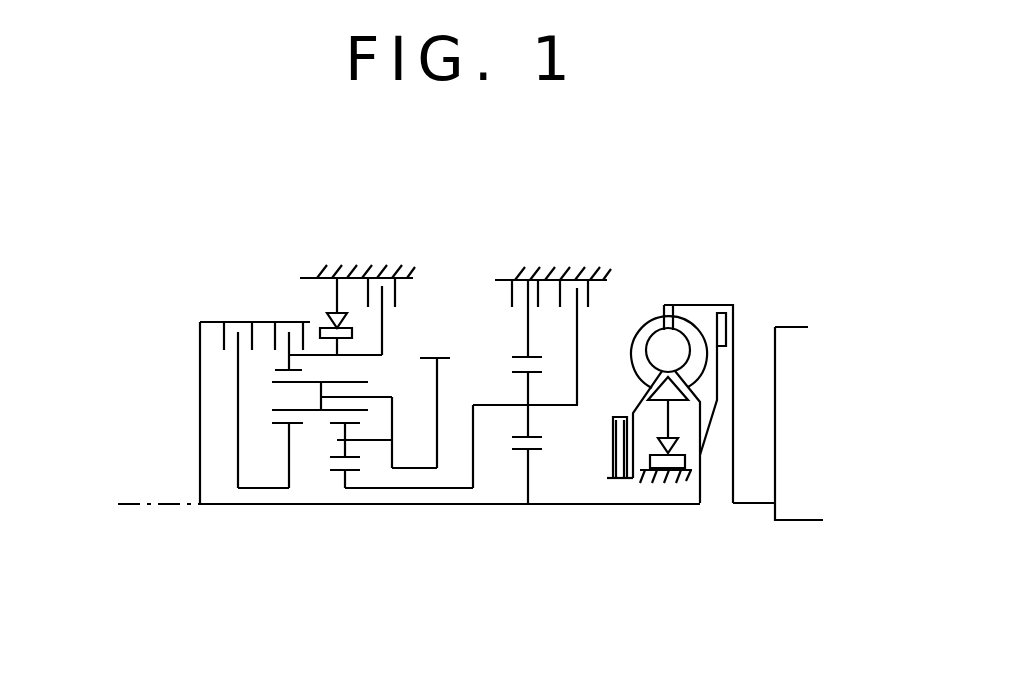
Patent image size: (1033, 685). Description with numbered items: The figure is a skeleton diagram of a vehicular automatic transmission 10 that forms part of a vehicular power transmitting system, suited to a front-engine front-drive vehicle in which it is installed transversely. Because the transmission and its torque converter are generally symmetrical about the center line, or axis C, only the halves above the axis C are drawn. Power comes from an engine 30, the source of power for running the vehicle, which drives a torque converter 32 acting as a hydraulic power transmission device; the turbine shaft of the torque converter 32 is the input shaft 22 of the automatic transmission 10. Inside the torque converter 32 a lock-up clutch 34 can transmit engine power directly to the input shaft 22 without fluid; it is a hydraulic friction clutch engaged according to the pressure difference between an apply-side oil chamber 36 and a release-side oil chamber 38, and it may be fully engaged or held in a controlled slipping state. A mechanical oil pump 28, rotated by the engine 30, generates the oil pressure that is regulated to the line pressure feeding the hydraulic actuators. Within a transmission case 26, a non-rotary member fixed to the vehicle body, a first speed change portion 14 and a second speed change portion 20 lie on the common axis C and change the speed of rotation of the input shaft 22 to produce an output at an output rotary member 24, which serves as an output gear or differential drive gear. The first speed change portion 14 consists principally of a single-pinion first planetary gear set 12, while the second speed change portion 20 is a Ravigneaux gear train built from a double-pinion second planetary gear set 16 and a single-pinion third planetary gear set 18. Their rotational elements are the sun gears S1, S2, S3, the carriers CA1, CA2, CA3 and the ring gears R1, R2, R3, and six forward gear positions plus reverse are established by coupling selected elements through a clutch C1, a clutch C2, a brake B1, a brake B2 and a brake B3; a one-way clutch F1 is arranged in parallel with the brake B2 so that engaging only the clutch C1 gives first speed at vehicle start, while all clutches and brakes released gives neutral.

The vehicular automatic transmission 10 is at (634, 250).
The first planetary gear set 12 is at (552, 442).
The first speed change portion 14 is at (599, 526).
The second planetary gear set 16 is at (385, 489).
The third planetary gear set 18 is at (236, 473).
The second speed change portion 20 is at (252, 445).
The input shaft 22 is at (683, 404).
The output rotary member 24 is at (444, 358).
The transmission case 26 is at (362, 275).
The mechanical oil pump 28 is at (623, 417).
The engine 30 is at (790, 328).
The torque converter 32 is at (694, 291).
The lock-up clutch 34 is at (756, 344).
The apply-side oil chamber 36 is at (706, 309).
The release-side oil chamber 38 is at (728, 355).
The axis C is at (133, 503).
The clutch C1 is at (230, 390).
The clutch C2 is at (280, 331).
The one-way clutch F1 is at (328, 316).
The brake B1 is at (596, 342).
The brake B2 is at (362, 316).
The brake B3 is at (508, 318).
The ring gear R1 is at (522, 355).
The ring gear R2 is at (236, 383).
The ring gear R3 is at (280, 370).
The carrier CA1 is at (556, 407).
The carrier CA2 is at (411, 482).
The carrier CA3 is at (392, 388).
The sun gear S1 is at (533, 452).
The sun gear S2 is at (338, 471).
The sun gear S3 is at (283, 425).